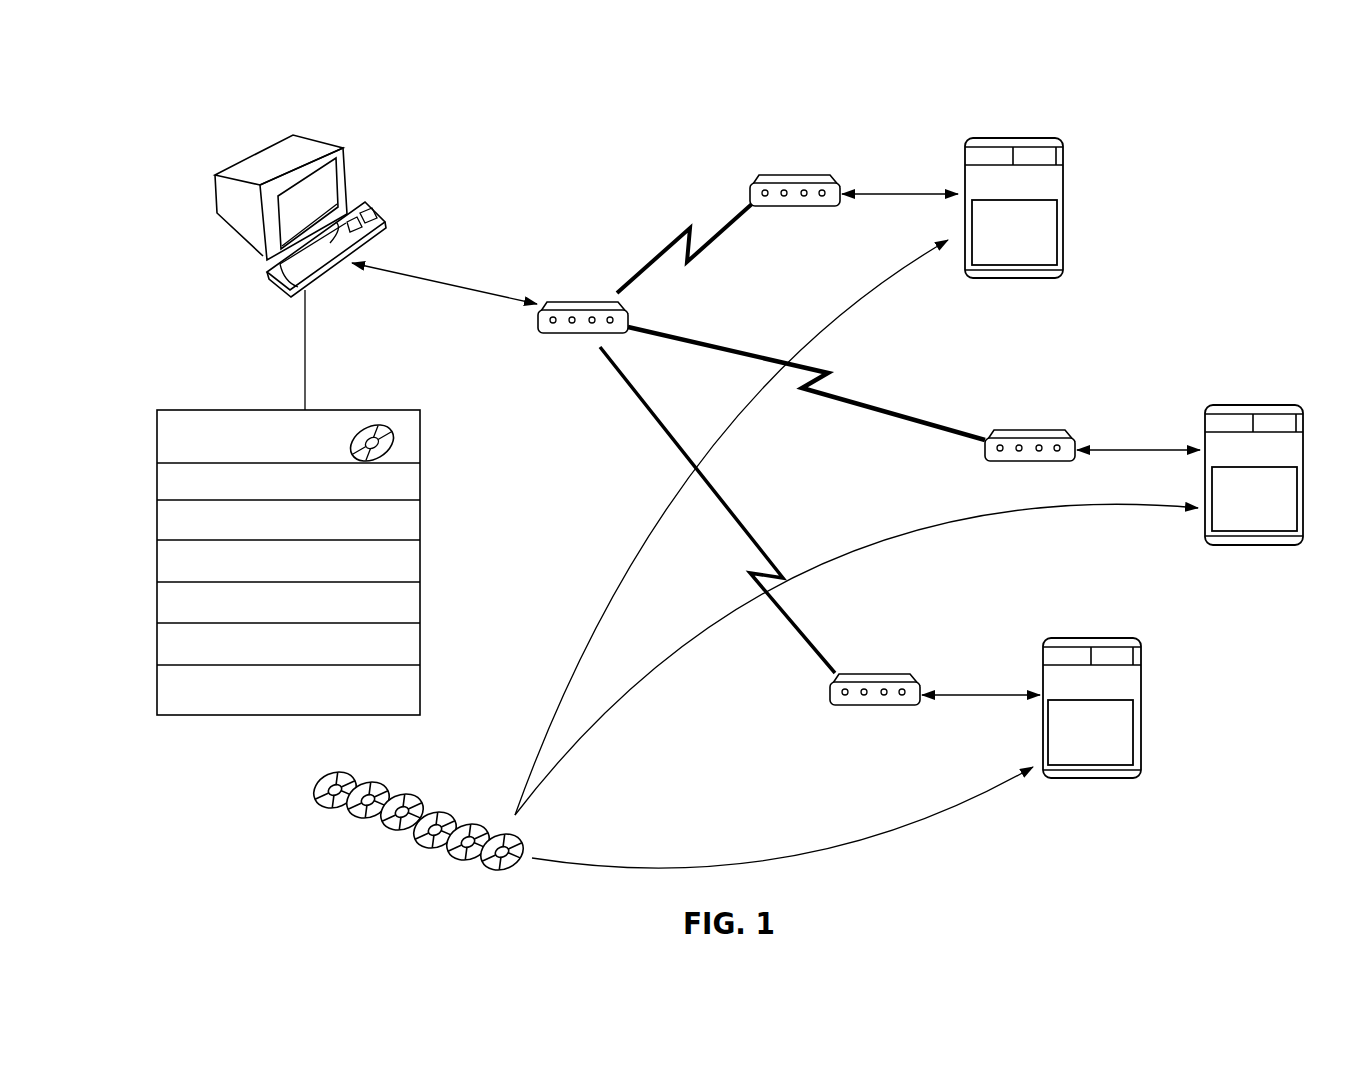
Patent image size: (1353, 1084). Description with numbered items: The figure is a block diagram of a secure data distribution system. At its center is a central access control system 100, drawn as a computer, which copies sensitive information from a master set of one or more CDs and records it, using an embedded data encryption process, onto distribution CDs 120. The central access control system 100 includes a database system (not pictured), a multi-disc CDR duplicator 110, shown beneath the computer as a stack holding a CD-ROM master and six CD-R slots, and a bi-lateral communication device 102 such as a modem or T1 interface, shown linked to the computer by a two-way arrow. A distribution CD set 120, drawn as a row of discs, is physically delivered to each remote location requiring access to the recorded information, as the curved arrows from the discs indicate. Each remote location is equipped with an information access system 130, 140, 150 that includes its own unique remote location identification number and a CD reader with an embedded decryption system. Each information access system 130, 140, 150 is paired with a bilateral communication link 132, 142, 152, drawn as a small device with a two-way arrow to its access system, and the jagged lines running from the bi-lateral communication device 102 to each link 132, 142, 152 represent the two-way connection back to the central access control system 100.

The central access control system 100 is at (272, 158).
The bi-lateral communication device 102 is at (587, 302).
The multi-disc CDR duplicator 110 is at (157, 442).
The distribution CDs 120 is at (383, 823).
The information access system 130 is at (1140, 672).
The bilateral communication link 132 is at (868, 673).
The information access system 140 is at (1230, 403).
The bilateral communication link 142 is at (1022, 430).
The information access system 150 is at (1063, 177).
The bilateral communication link 152 is at (795, 177).